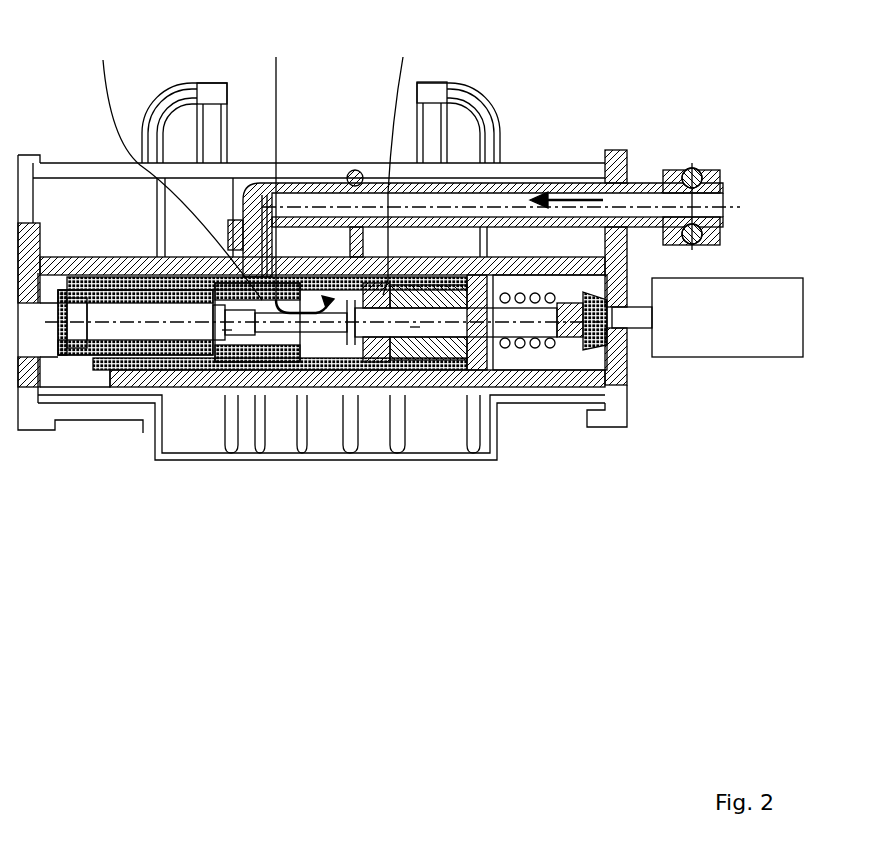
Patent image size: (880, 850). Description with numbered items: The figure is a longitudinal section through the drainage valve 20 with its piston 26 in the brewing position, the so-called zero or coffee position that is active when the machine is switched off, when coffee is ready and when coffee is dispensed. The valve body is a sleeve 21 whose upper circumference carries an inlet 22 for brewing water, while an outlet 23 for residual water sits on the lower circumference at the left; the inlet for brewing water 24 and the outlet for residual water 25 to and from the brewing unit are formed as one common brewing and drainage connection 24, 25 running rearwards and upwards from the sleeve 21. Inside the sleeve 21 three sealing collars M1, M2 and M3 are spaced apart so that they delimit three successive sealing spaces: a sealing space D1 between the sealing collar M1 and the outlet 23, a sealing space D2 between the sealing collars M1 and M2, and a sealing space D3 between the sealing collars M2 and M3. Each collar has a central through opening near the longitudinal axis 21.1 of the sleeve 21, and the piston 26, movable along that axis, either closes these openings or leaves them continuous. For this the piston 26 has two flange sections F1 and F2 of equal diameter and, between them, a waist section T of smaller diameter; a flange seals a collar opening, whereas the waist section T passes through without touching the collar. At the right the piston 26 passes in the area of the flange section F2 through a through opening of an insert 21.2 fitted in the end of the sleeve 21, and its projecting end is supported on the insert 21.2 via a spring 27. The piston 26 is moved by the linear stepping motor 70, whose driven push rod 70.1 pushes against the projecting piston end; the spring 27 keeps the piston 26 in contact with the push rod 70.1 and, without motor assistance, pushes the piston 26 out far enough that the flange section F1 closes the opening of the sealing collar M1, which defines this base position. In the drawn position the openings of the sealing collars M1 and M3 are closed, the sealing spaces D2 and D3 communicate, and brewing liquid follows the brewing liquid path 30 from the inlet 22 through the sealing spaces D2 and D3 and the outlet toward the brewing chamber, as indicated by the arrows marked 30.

The drainage valve 20 is at (656, 118).
The sleeve 21 is at (163, 372).
The longitudinal axis 21.1 is at (180, 323).
The insert 21.2 is at (468, 360).
The inlet 22 is at (263, 266).
The outlet 23 is at (75, 386).
The inlet for brewing water 24 is at (344, 312).
The outlet for residual water 25 is at (428, 322).
The piston 26 is at (540, 341).
The spring 27 is at (523, 350).
The brewing liquid path 30 is at (313, 227).
The linear stepping motor 70 is at (713, 372).
The push rod 70.1 is at (633, 320).
The sealing space D1 is at (120, 330).
The sealing space D2 is at (296, 350).
The sealing space D3 is at (325, 337).
The flange section F1 is at (227, 330).
The flange section F2 is at (415, 327).
The waist section T is at (283, 327).
The sealing collar M1 is at (169, 165).
The sealing collar M2 is at (294, 171).
The sealing collar M3 is at (407, 162).